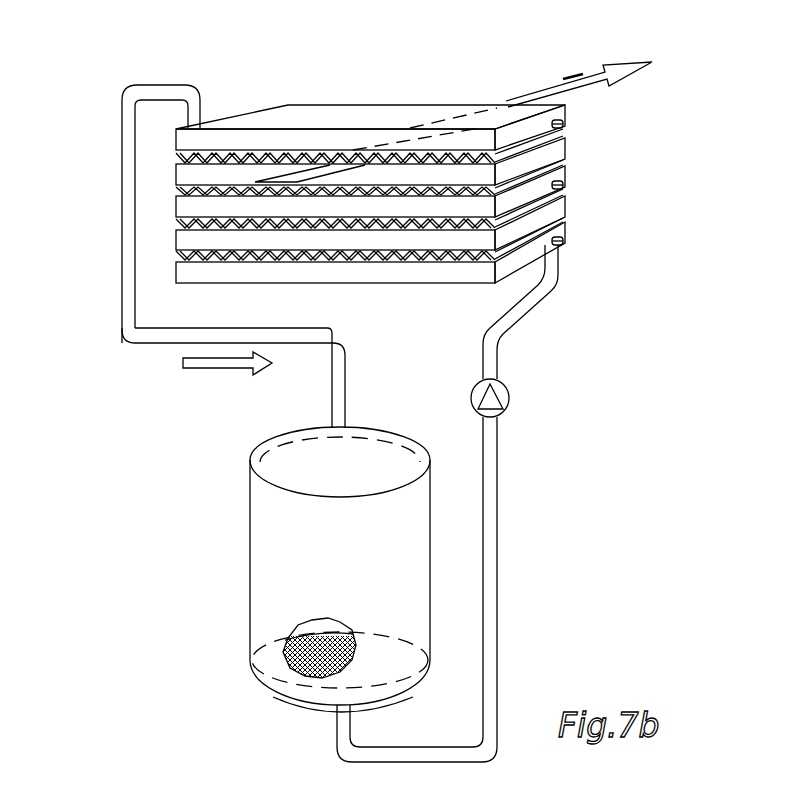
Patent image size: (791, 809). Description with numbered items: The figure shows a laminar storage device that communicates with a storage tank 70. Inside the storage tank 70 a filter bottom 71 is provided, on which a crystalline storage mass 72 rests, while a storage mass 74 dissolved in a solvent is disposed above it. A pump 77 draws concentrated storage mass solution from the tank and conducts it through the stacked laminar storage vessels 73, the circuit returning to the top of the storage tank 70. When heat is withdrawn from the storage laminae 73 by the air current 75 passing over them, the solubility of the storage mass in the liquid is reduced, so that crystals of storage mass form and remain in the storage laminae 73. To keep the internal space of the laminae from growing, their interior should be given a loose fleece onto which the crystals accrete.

The storage tank 70 is at (293, 477).
The filter bottom 71 is at (333, 672).
The crystalline storage mass 72 is at (285, 660).
The laminar storage vessels 73 is at (558, 117).
The storage mass dissolved in a solvent 74 is at (305, 556).
The air current 75 is at (305, 170).
The pump 77 is at (490, 403).